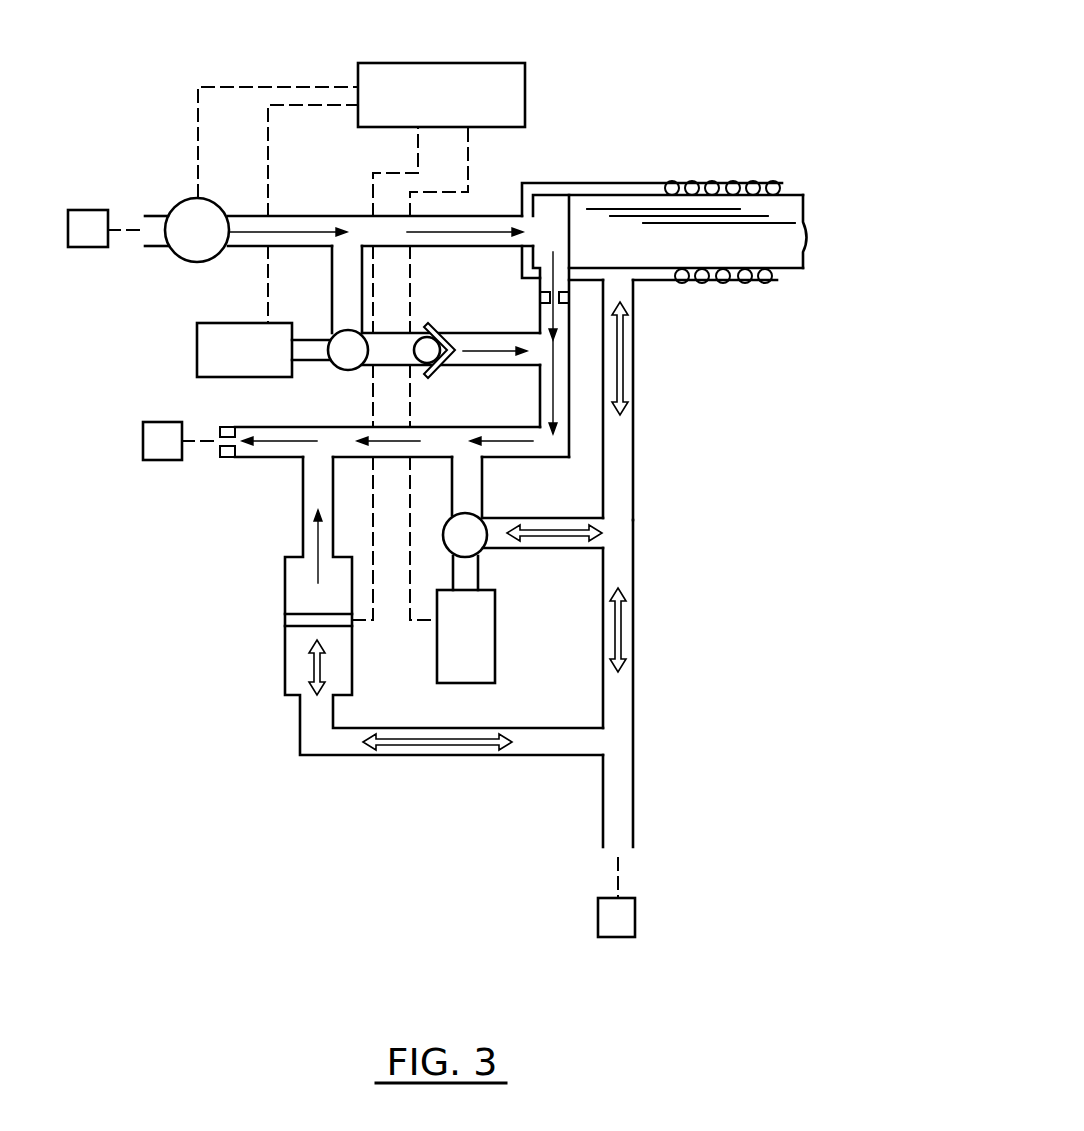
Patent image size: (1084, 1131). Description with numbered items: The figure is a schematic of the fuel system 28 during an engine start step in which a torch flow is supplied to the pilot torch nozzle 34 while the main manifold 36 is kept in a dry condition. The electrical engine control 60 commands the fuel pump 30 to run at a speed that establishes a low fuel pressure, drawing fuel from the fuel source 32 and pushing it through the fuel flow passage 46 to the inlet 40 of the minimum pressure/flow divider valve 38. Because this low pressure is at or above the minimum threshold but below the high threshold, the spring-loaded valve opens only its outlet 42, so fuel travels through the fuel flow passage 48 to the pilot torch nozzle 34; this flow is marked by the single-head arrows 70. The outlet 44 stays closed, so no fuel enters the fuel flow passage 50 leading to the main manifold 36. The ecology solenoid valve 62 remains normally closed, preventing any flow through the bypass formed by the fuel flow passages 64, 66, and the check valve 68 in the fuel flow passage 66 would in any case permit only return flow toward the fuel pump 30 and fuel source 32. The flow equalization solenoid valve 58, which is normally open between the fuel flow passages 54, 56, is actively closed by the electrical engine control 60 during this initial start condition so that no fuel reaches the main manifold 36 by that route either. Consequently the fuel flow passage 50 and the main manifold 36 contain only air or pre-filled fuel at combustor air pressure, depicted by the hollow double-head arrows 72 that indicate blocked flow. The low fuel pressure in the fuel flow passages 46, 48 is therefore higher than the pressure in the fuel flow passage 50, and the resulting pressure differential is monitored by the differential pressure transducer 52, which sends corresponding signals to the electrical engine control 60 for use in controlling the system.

The fuel system 28 is at (604, 117).
The fuel pump 30 is at (180, 203).
The fuel source 32 is at (88, 210).
The pilot torch nozzle 34 is at (162, 460).
The main manifold 36 is at (635, 915).
The minimum pressure/flow divider valve 38 is at (630, 182).
The inlet 40 is at (523, 223).
The outlet 42 is at (548, 282).
The outlet 44 is at (622, 278).
The fuel flow passage 46 is at (295, 215).
The fuel flow passage 48 is at (265, 427).
The fuel flow passage 50 is at (633, 556).
The differential pressure transducer 52 is at (285, 648).
The fuel flow passage 54 is at (482, 487).
The fuel flow passage 56 is at (545, 548).
The flow equalization solenoid valve 58 is at (495, 655).
The electrical engine control 60 is at (398, 62).
The ecology solenoid valve 62 is at (197, 348).
The fuel flow passage 64 is at (330, 260).
The fuel flow passage 66 is at (482, 366).
The check valve 68 is at (430, 324).
The arrow 70 is at (325, 232).
The hollow double-head arrows 72 is at (623, 638).